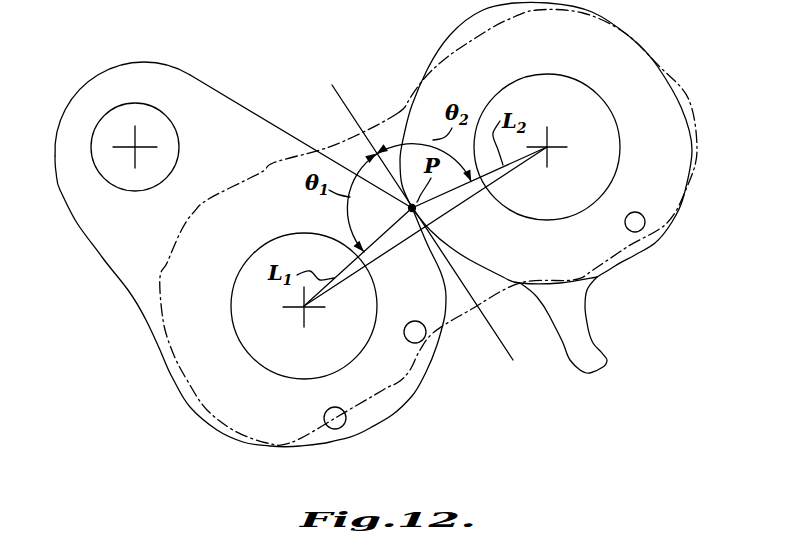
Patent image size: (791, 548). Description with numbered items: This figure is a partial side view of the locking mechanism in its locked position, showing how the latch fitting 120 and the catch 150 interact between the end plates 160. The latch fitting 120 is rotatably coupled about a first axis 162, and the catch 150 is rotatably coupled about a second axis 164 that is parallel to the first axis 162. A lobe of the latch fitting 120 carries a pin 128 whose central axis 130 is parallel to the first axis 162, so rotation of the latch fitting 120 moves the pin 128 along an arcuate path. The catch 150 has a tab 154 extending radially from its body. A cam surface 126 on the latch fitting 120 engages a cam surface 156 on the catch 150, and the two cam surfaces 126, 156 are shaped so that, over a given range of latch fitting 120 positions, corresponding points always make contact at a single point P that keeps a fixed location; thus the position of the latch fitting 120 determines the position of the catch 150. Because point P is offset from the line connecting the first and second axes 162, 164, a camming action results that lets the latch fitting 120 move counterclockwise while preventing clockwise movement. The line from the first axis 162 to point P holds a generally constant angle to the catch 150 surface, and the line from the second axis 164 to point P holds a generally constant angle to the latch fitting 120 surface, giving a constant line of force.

The latch fitting 120 is at (170, 390).
The cam surface 126 is at (414, 213).
The pin 128 is at (160, 110).
The central axis 130 is at (135, 147).
The catch 150 is at (668, 63).
The tab 154 is at (606, 362).
The cam surface 156 is at (409, 206).
The end plates 160 is at (368, 128).
The first axis 162 is at (303, 307).
The second axis 164 is at (548, 146).